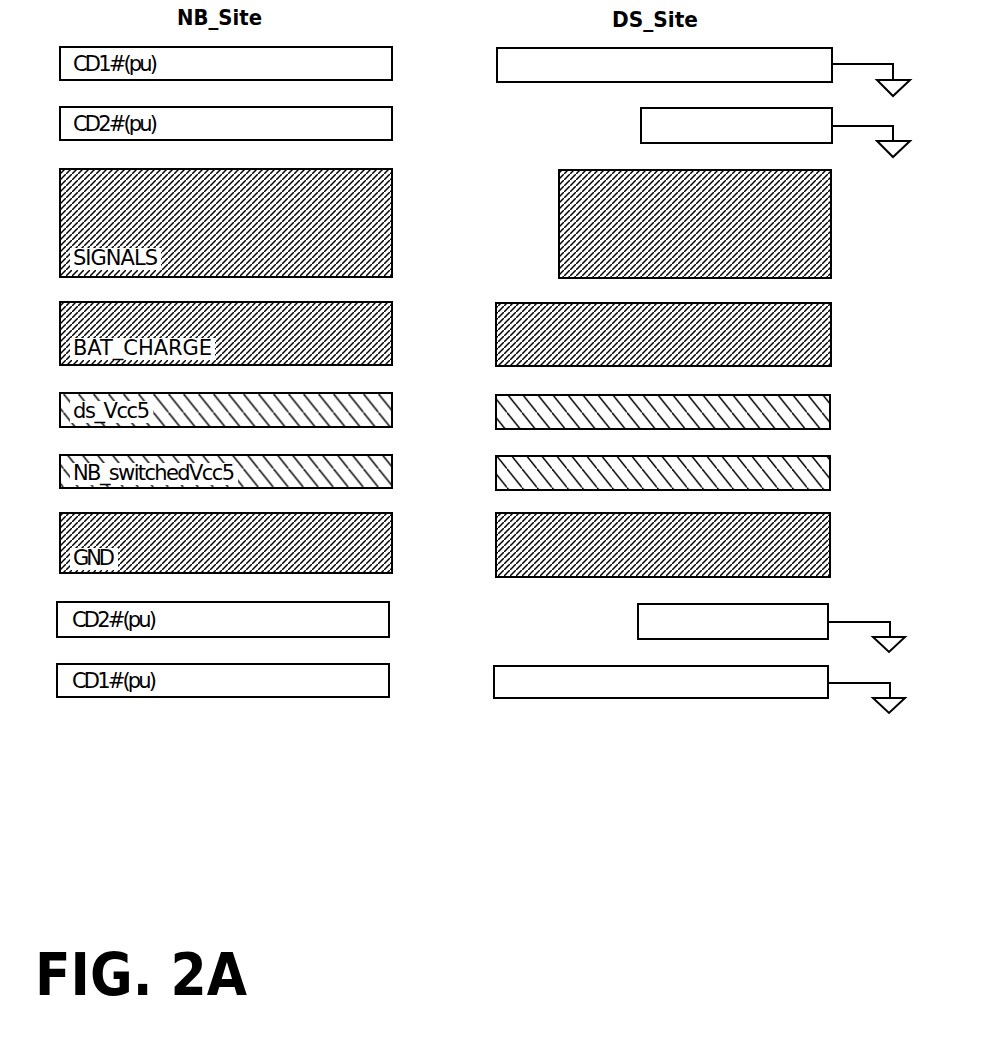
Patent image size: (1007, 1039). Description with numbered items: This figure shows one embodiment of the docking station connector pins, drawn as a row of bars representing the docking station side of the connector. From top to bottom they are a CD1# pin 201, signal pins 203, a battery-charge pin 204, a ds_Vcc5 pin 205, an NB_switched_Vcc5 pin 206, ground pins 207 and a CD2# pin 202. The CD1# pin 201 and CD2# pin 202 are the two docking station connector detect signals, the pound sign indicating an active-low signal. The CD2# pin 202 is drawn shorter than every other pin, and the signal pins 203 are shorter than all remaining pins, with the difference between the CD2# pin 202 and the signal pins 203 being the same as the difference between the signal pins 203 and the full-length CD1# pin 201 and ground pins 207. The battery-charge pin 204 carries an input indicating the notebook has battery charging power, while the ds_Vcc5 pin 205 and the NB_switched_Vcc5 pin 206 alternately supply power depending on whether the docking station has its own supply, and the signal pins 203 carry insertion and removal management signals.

The CD1# pin 201 is at (820, 77).
The CD2# pin 202 is at (820, 632).
The signal pins 203 is at (820, 271).
The battery-charge pin 204 is at (820, 359).
The ds_Vcc5 pin 205 is at (820, 425).
The NB_switched_Vcc5 pin 206 is at (820, 486).
The ground pins 207 is at (820, 571).